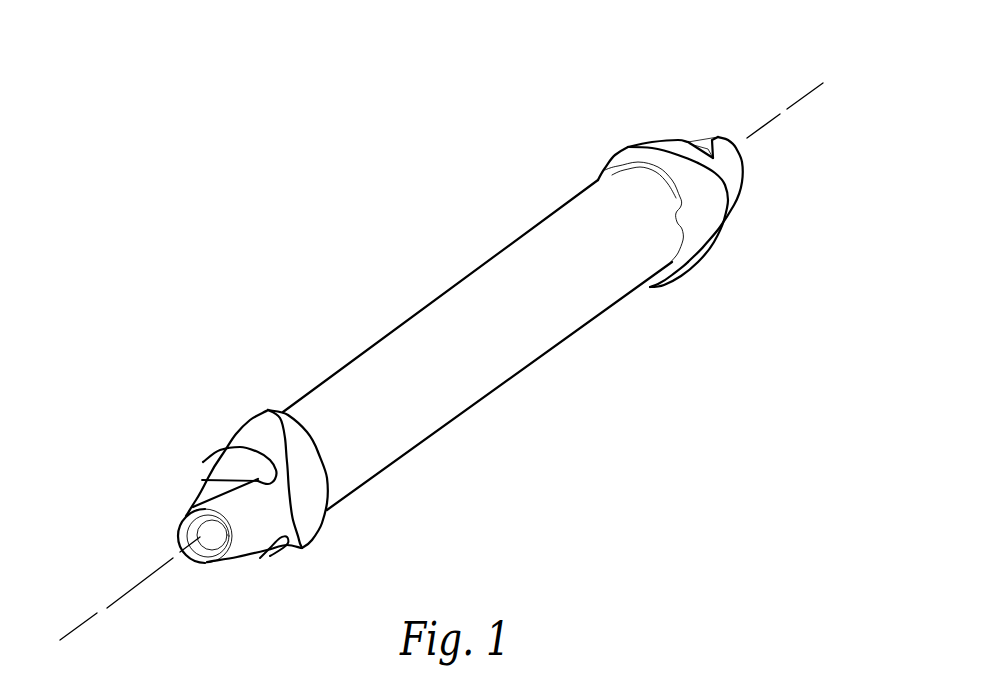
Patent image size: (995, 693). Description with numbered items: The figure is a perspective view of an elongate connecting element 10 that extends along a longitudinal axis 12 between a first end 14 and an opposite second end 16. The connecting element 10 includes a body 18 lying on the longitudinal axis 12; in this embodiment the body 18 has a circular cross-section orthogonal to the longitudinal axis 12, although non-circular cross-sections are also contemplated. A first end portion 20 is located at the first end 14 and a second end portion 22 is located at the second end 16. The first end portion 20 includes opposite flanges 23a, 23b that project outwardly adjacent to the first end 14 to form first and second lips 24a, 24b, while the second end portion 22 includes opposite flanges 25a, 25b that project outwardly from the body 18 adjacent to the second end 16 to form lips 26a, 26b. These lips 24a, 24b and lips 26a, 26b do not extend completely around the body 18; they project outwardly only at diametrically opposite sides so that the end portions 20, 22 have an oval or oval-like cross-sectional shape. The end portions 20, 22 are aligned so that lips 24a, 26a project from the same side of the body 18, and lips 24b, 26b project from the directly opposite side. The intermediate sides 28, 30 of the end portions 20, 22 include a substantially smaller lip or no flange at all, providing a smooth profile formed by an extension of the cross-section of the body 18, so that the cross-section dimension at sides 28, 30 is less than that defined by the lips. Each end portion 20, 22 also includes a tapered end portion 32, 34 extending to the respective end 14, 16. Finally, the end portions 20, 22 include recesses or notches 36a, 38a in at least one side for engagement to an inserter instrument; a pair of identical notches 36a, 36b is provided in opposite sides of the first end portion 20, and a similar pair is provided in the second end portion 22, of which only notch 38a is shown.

The elongate connecting element 10 is at (352, 250).
The longitudinal axis 12 is at (782, 111).
The first end 14 is at (200, 564).
The second end 16 is at (748, 154).
The body 18 is at (511, 378).
The first end portion 20 is at (245, 420).
The second end portion 22 is at (738, 184).
The flange 23a is at (262, 409).
The flange 23b is at (306, 551).
The first lip 24a is at (284, 408).
The second lip 24b is at (324, 525).
The flange 25a is at (628, 146).
The flange 25b is at (678, 276).
The lip 26a is at (626, 149).
The lip 26b is at (653, 284).
The intermediate side 28 is at (329, 466).
The intermediate side 30 is at (681, 230).
The tapered end portion 32 is at (197, 498).
The tapered end portion 34 is at (708, 139).
The notch 36a is at (213, 460).
The notch 36b is at (267, 556).
The notch 38a is at (687, 140).